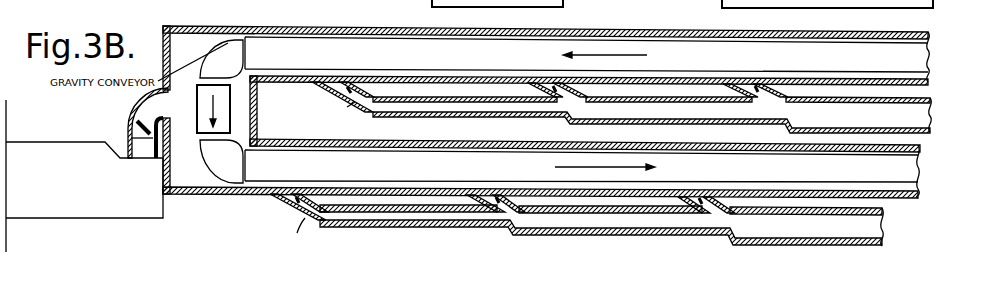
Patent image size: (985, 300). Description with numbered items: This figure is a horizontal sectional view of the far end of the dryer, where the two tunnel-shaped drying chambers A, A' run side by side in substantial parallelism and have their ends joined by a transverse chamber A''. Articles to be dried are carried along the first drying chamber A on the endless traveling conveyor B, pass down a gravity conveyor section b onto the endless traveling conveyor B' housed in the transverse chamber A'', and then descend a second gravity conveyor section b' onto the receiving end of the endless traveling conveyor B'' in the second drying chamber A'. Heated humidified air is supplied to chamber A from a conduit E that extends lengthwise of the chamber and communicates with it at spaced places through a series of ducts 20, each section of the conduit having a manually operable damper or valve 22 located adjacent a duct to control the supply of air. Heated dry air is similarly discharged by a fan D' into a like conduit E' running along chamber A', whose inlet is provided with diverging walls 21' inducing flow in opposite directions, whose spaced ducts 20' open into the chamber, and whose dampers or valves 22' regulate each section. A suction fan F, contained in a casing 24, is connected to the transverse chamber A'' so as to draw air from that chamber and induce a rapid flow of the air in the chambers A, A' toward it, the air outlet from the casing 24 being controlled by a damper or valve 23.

The ducts 20 is at (578, 89).
The ducts 20' is at (536, 203).
The damper or valve 22 is at (505, 147).
The damper or valve 22' is at (611, 182).
The damper or valve 23 is at (133, 118).
The casing 24 is at (137, 152).
The diverging walls 21' is at (514, 12).
The drying chamber A is at (559, 46).
The drying chamber A' is at (541, 190).
The transverse chamber A'' is at (146, 98).
The endless traveling conveyor B is at (586, 36).
The endless traveling conveyor B' is at (201, 109).
The endless traveling conveyor B'' is at (581, 207).
The gravity conveyor section b is at (220, 39).
The gravity conveyor section b' is at (218, 188).
The fan D' is at (772, 11).
The conduit E is at (652, 118).
The conduit E' is at (601, 234).
The suction fan F is at (117, 208).